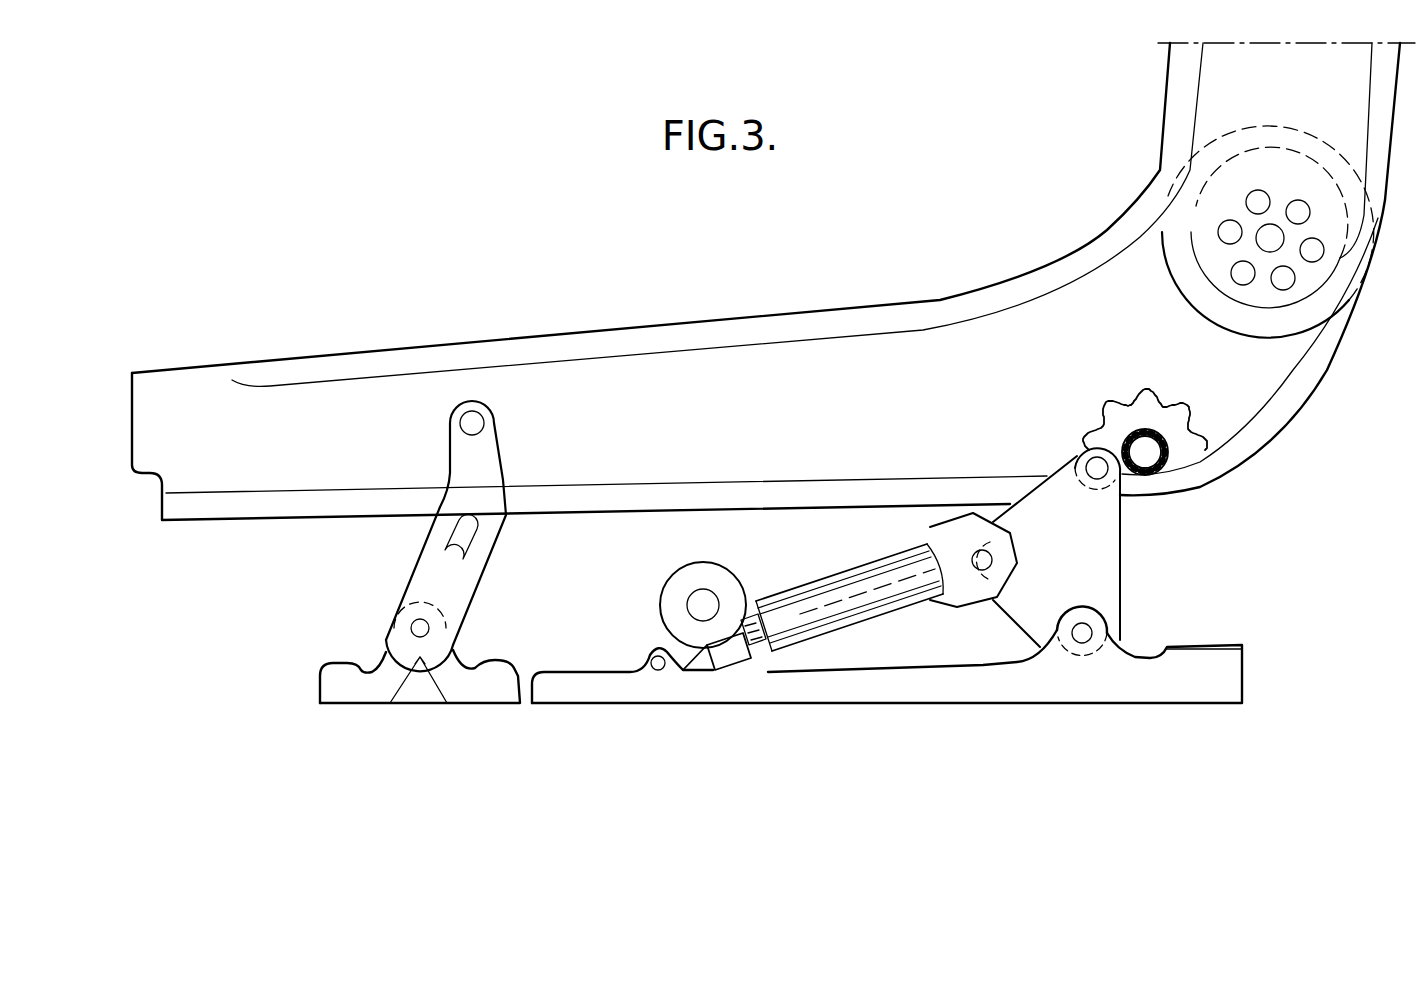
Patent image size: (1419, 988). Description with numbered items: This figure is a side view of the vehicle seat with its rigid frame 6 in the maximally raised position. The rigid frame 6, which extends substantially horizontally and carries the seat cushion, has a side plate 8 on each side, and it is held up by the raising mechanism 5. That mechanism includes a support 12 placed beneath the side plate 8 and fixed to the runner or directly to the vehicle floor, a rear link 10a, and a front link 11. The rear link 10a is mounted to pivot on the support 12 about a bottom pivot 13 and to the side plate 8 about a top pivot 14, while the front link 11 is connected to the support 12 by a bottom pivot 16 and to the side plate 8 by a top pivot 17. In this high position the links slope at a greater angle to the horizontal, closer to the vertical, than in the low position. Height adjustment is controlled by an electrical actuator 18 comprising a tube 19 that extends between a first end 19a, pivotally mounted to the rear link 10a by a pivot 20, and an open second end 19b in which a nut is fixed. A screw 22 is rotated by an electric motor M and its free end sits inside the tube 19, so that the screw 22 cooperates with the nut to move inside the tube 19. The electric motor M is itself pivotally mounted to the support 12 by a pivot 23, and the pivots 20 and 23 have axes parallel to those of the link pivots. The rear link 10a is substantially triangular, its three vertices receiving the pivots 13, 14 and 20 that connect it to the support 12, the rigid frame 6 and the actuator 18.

The raising mechanism 5 is at (366, 595).
The rigid frame 6 is at (668, 312).
The side plate 8 is at (775, 316).
The rear link 10a is at (1097, 557).
The front link 11 is at (428, 563).
The support 12 is at (493, 673).
The bottom pivot 13 is at (1086, 633).
The top pivot 14 is at (1100, 471).
The bottom pivot 16 is at (412, 629).
The top pivot 17 is at (468, 412).
The electrical actuator 18 is at (820, 563).
The tube 19 is at (838, 600).
The first end of the tube 19a is at (962, 595).
The second end of the tube 19b is at (773, 618).
The pivot 20 is at (981, 570).
The screw 22 is at (750, 630).
The pivot 23 is at (651, 658).
The electric motor M is at (672, 597).